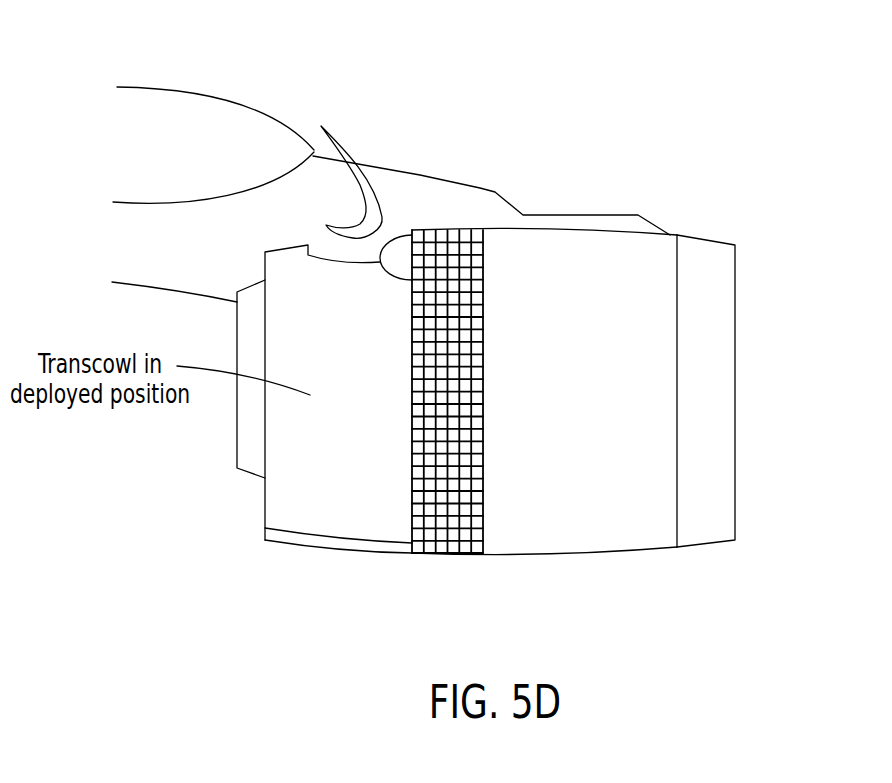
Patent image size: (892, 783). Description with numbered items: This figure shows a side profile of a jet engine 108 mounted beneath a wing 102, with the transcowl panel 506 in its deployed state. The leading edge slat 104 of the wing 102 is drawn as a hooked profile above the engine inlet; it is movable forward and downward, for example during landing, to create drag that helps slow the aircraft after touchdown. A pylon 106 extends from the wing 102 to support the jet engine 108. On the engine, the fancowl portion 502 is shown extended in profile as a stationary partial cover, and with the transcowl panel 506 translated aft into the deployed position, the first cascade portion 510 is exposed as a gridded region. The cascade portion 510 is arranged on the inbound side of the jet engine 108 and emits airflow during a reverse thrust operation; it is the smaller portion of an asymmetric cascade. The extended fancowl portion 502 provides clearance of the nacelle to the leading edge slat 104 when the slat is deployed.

The wing 102 is at (290, 56).
The leading edge slat 104 is at (385, 108).
The pylon 106 is at (515, 142).
The first fancowl portion 502 is at (647, 163).
The transcowl panel 506 is at (330, 595).
The first cascade portion 510 is at (452, 607).
The jet engine 108 is at (630, 607).